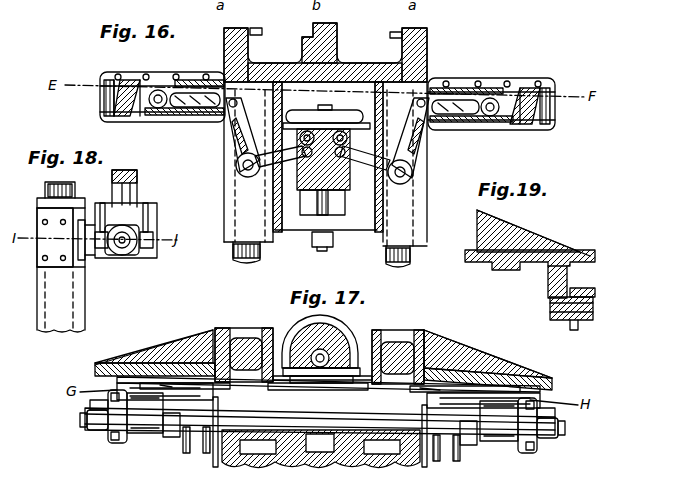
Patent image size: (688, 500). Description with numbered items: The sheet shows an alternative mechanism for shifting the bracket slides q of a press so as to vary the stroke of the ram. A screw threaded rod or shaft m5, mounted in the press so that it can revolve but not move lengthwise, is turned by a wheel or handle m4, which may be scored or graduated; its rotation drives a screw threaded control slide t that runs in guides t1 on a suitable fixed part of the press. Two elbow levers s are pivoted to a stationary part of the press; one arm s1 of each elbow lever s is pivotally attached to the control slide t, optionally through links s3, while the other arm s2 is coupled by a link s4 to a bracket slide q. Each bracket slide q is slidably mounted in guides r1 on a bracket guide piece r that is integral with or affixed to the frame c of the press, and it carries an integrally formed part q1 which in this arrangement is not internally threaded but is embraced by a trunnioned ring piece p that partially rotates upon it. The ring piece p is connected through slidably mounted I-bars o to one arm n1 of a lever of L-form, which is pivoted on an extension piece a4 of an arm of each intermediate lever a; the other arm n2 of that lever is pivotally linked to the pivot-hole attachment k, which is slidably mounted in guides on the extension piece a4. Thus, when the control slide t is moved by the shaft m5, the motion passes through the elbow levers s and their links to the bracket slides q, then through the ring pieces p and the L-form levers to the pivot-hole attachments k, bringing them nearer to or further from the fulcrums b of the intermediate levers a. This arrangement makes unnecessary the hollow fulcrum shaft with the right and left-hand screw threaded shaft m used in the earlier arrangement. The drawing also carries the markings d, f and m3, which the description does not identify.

In FIG. 17, the intermediate lever a is at (214, 460).
In FIG. 17, the fulcrum b is at (295, 423).
In FIG. 16, the frame c is at (276, 50).
In FIG. 18, the frame c is at (44, 298).
In FIG. 17, the frame c is at (245, 330).
In FIG. 17, the pin d is at (206, 454).
In FIG. 17, the bed f is at (315, 453).
In FIG. 17, the pivot-hole attachment k is at (478, 400).
In FIG. 17, the right and left-hand screw threaded shaft m is at (84, 421).
In FIG. 17, the collar m3 is at (168, 438).
In FIG. 16, the wheel or handle m4 is at (293, 120).
In FIG. 17, the wheel or handle m4 is at (342, 338).
In FIG. 16, the screw threaded rod or shaft m5 is at (328, 210).
In FIG. 18, the arm of L-form lever n1 is at (140, 185).
In FIG. 17, the arm of L-form lever n1 is at (112, 443).
In FIG. 17, the other arm of L-form lever n2 is at (140, 434).
In FIG. 18, the I-bars o is at (150, 236).
In FIG. 18, the trunnioned ring piece p is at (128, 254).
In FIG. 19, the trunnioned ring piece p is at (586, 292).
In FIG. 16, the bracket slide q is at (132, 106).
In FIG. 18, the bracket slide q is at (116, 205).
In FIG. 19, the bracket slide q is at (548, 264).
In FIG. 17, the bracket slide q is at (128, 370).
In FIG. 19, the part of bracket slide q1 is at (594, 310).
In FIG. 17, the part of bracket slide q1 is at (93, 407).
In FIG. 16, the bracket guide piece r is at (104, 100).
In FIG. 18, the bracket guide piece r is at (42, 254).
In FIG. 19, the bracket guide piece r is at (520, 232).
In FIG. 17, the bracket guide piece r is at (200, 350).
In FIG. 16, the guides r1 is at (192, 80).
In FIG. 16, the elbow lever s is at (262, 160).
In FIG. 16, the arm of elbow lever s1 is at (238, 172).
In FIG. 17, the arm of elbow lever s1 is at (272, 383).
In FIG. 16, the other arm of elbow lever s2 is at (238, 135).
In FIG. 16, the links s3 is at (335, 124).
In FIG. 16, the link s4 is at (176, 99).
In FIG. 17, the link s4 is at (190, 382).
In FIG. 16, the control slide t is at (318, 152).
In FIG. 17, the control slide t is at (322, 380).
In FIG. 17, the guides t1 is at (270, 394).
In FIG. 17, the extension piece a4 is at (117, 380).